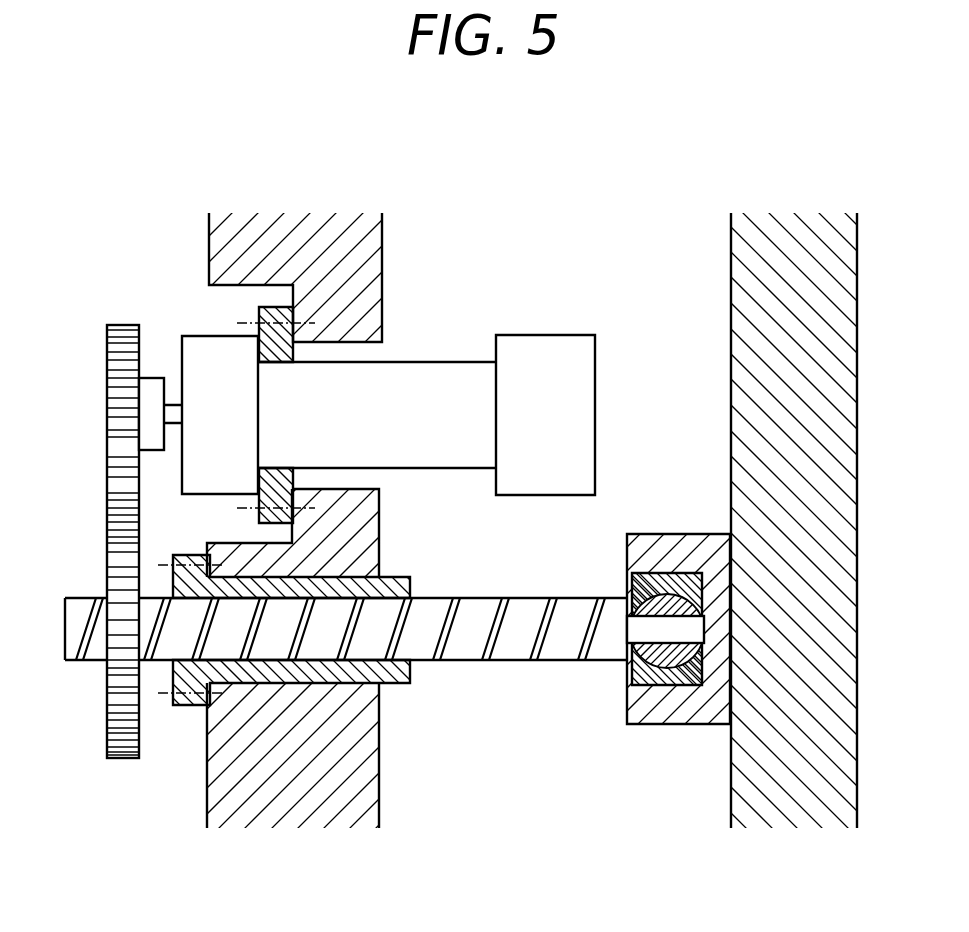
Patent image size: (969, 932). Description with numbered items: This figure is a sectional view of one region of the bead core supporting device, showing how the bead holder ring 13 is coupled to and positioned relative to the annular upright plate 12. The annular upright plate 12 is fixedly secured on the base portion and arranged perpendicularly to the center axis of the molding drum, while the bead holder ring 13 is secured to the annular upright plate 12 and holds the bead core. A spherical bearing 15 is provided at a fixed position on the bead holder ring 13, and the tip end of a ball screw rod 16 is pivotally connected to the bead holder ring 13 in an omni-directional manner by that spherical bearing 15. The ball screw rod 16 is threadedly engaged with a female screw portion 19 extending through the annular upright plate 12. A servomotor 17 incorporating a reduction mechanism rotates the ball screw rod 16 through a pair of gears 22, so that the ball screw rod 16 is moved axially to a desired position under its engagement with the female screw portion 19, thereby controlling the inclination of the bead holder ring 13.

The annular upright plate 12 is at (300, 248).
The bead holder ring 13 is at (793, 270).
The spherical bearing 15 is at (665, 582).
The ball screw rod 16 is at (507, 650).
The servomotor 17 is at (422, 394).
The female screw portion 19 is at (410, 684).
The gears 22 is at (107, 568).